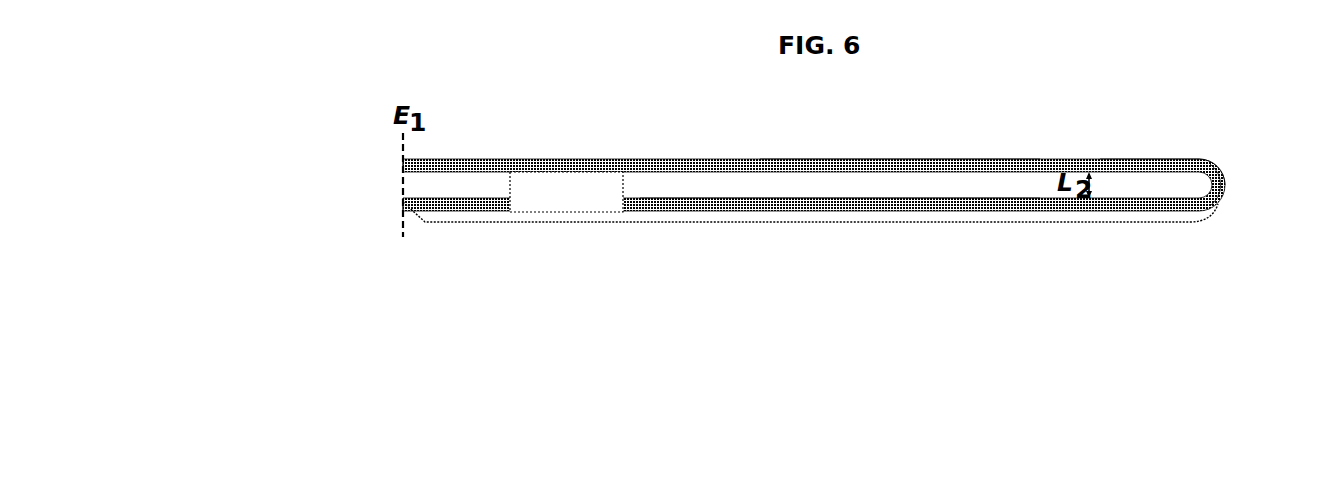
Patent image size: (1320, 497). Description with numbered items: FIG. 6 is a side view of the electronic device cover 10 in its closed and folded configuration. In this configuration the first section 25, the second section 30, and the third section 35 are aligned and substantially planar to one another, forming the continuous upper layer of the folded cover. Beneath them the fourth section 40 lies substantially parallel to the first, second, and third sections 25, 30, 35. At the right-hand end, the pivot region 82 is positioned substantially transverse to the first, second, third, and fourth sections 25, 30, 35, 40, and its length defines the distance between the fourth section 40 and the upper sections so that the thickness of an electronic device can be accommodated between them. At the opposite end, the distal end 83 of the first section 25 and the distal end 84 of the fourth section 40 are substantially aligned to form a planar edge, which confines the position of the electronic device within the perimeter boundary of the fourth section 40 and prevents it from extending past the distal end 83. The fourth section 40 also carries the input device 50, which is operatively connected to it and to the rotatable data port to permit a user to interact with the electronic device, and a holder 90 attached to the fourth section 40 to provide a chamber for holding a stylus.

The electronic device cover 10 is at (333, 177).
The first section 25 is at (659, 159).
The second section 30 is at (892, 159).
The third section 35 is at (1119, 159).
The fourth section 40 is at (1116, 223).
The input device 50 is at (731, 196).
The pivot region 82 is at (1226, 184).
The distal end of the first section 83 is at (398, 164).
The distal end of the fourth section 84 is at (398, 205).
The holder 90 is at (533, 202).